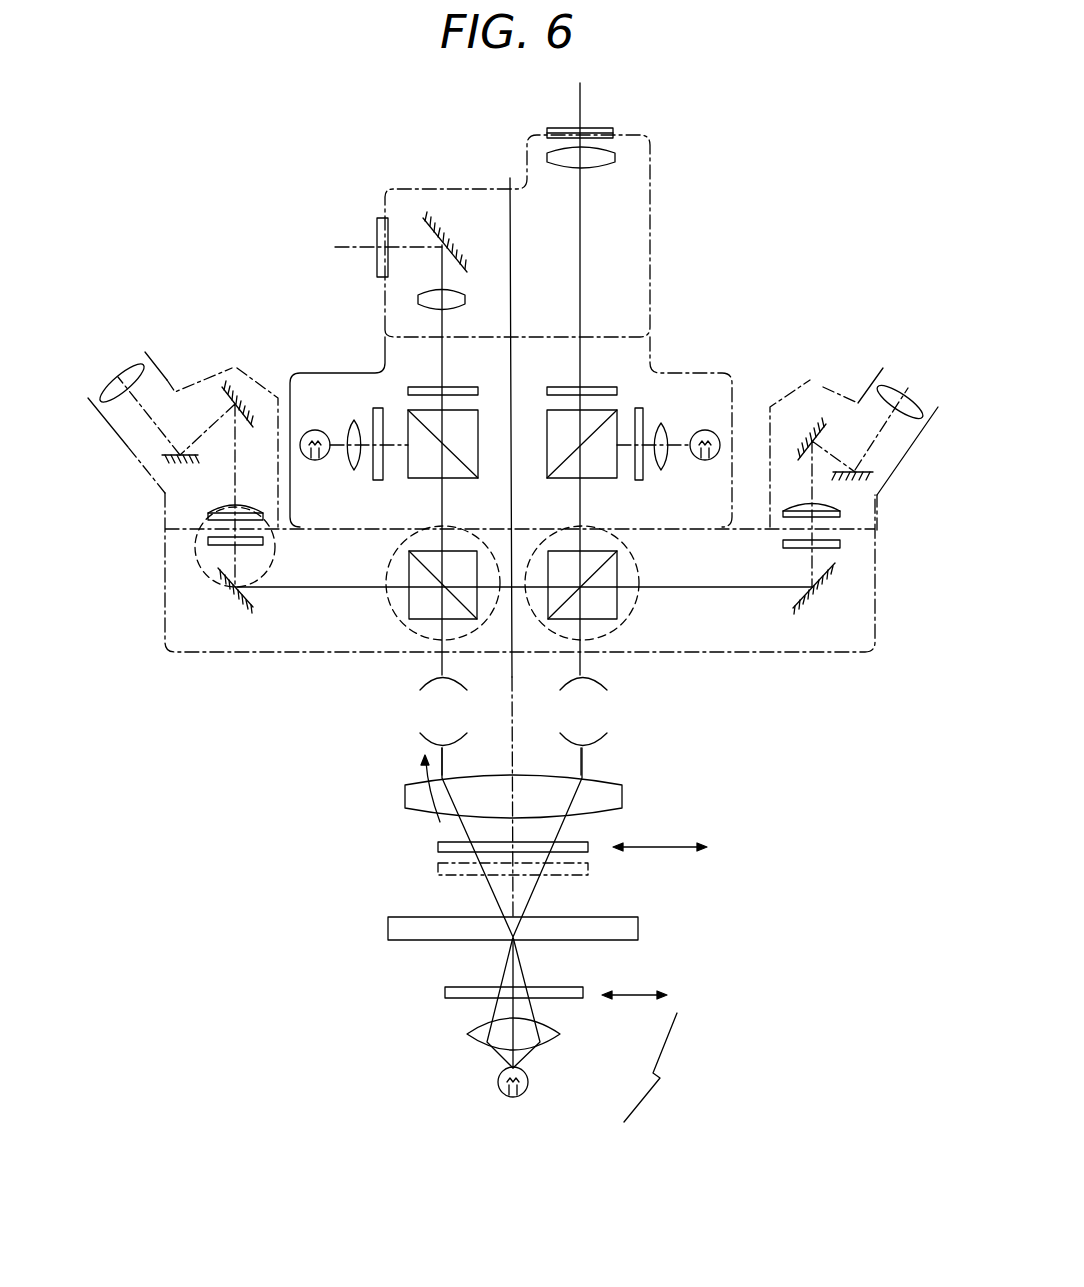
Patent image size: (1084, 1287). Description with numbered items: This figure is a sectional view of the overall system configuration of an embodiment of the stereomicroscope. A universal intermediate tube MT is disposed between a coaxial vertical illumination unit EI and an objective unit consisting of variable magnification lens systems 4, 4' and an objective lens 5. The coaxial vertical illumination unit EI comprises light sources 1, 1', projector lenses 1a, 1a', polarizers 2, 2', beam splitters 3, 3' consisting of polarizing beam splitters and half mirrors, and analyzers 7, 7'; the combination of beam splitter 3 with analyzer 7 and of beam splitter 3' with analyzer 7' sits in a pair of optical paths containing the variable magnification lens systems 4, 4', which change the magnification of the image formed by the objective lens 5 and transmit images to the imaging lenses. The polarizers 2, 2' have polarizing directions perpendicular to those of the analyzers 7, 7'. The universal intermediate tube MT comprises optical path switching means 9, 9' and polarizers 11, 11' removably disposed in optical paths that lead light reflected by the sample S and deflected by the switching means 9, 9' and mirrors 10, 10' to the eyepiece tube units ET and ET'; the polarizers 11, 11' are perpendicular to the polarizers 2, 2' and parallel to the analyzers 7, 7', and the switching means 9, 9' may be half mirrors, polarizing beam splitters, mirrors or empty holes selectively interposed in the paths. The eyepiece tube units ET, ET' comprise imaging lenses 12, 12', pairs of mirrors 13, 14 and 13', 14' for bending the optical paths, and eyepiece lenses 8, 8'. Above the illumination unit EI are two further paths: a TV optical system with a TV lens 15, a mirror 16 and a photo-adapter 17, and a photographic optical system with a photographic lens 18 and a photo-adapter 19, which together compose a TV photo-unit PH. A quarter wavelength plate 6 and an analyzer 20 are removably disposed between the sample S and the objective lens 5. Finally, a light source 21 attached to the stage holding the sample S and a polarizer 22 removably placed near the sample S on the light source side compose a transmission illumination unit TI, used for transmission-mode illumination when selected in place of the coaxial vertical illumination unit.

The light source 1 is at (724, 405).
The light source 1' is at (307, 397).
The projector lens 1a is at (676, 401).
The projector lens 1a' is at (330, 391).
The polarizer 2 is at (649, 465).
The polarizer 2' is at (361, 406).
The beam splitter 3 is at (570, 466).
The beam splitter 3' is at (450, 465).
The variable magnification lens system 4 is at (604, 712).
The variable magnification lens system 4' is at (421, 712).
The objective lens 5 is at (612, 780).
The quarter wavelength plate 6 is at (590, 843).
The analyzer 7 is at (570, 367).
The analyzer 7' is at (452, 367).
The eyepiece lens 8 is at (900, 378).
The eyepiece lens 8' is at (121, 352).
The optical path switching means 9 is at (596, 611).
The optical path switching means 9' is at (430, 611).
The mirror 10 is at (789, 602).
The mirror 10' is at (252, 631).
The polarizer 11 is at (856, 564).
The polarizer 11' is at (196, 547).
The imaging lens 12 is at (853, 533).
The imaging lens 12' is at (186, 503).
The mirror 13 is at (815, 400).
The mirror 13' is at (210, 385).
The mirror 14 is at (885, 500).
The mirror 14' is at (146, 458).
The TV lens 15 is at (466, 298).
The mirror 16 is at (428, 230).
The photo-adapter 17 is at (377, 228).
The photographic lens 18 is at (617, 155).
The photo-adapter 19 is at (608, 126).
The analyzer 20 is at (438, 870).
The light source 21 is at (530, 1082).
The polarizer 22 is at (578, 988).
The sample S is at (635, 918).
The TV photo-unit PH is at (658, 262).
The coaxial vertical illumination unit EI is at (702, 360).
The eyepiece tube unit ET is at (862, 449).
The eyepiece tube unit ET' is at (183, 414).
The universal intermediate tube MT is at (782, 664).
The transmission illumination unit TI is at (656, 1067).